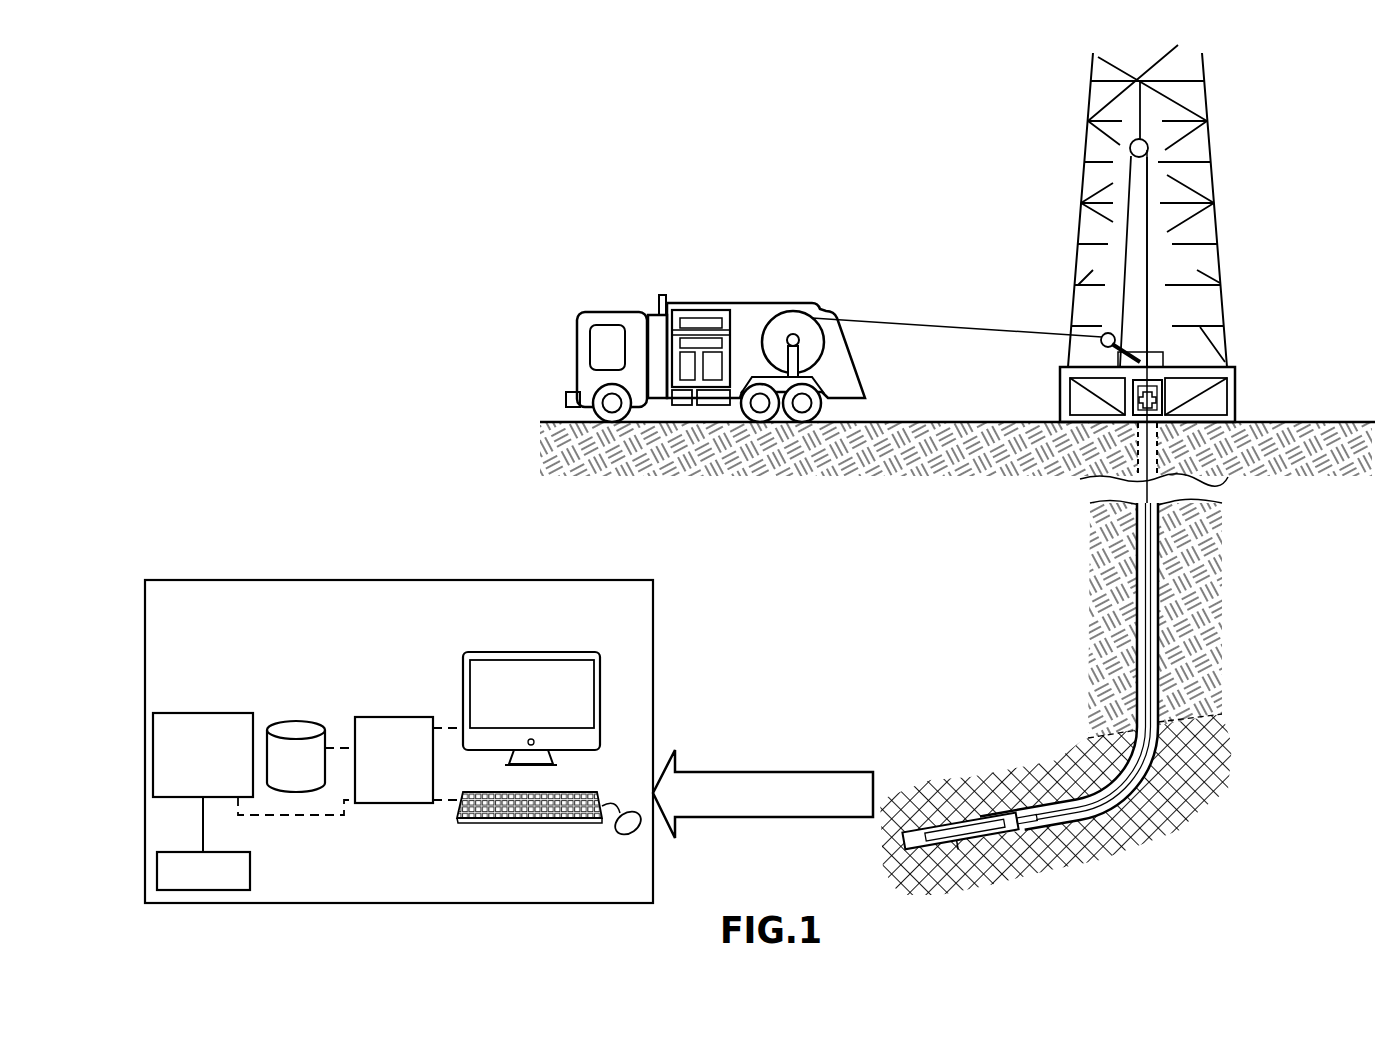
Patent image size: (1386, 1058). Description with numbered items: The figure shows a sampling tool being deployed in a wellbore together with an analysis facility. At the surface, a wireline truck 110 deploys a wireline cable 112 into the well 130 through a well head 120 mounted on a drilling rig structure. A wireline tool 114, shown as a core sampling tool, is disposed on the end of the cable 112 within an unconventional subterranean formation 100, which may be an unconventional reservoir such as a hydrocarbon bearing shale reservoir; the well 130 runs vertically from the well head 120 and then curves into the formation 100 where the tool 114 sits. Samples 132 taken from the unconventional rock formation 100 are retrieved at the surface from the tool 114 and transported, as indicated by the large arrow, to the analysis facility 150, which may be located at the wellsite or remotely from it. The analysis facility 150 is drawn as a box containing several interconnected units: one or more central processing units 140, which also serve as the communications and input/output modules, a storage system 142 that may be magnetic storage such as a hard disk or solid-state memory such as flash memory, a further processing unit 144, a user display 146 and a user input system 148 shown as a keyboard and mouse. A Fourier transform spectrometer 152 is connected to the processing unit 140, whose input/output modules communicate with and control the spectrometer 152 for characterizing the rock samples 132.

The unconventional subterranean formation 100 is at (1176, 829).
The wireline truck 110 is at (806, 303).
The wireline cable 112 is at (962, 319).
The wireline tool 114 is at (963, 836).
The well head 120 is at (1265, 338).
The well 130 is at (1137, 604).
The samples 132 is at (775, 818).
The central processing units and input/output modules 140 is at (225, 765).
The storage system 142 is at (316, 765).
The computer 144 is at (414, 770).
The user display 146 is at (551, 705).
The user input system 148 is at (584, 782).
The analysis facility 150 is at (653, 655).
The Fourier transform spectrometer 152 is at (223, 885).